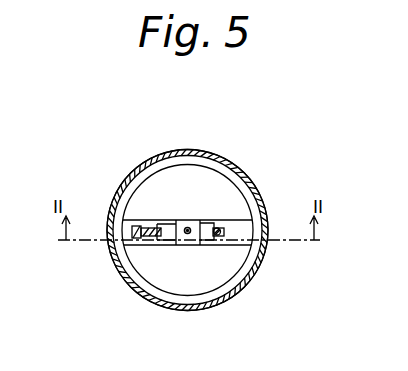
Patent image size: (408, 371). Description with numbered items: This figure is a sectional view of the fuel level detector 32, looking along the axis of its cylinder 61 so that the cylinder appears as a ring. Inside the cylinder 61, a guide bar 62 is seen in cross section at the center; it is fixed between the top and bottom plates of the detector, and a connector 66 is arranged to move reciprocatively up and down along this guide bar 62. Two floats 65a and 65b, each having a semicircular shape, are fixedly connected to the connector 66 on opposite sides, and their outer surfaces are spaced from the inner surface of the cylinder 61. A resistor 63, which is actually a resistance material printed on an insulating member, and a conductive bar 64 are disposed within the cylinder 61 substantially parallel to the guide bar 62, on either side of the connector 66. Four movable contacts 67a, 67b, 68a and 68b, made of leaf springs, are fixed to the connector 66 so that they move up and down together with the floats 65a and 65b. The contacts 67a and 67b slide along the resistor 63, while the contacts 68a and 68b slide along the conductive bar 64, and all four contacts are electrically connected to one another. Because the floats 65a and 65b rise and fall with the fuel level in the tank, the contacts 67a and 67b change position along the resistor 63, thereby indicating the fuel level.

The fuel level detector 32 is at (111, 136).
The cylinder 61 is at (252, 184).
The guide bar 62 is at (187, 227).
The resistor 63 is at (130, 232).
The conductive bar 64 is at (224, 231).
The float 65a is at (235, 168).
The float 65b is at (215, 302).
The connector 66 is at (183, 246).
The movable contact 67a is at (157, 226).
The movable contact 67b is at (156, 246).
The movable contact 68a is at (207, 226).
The movable contact 68b is at (217, 245).